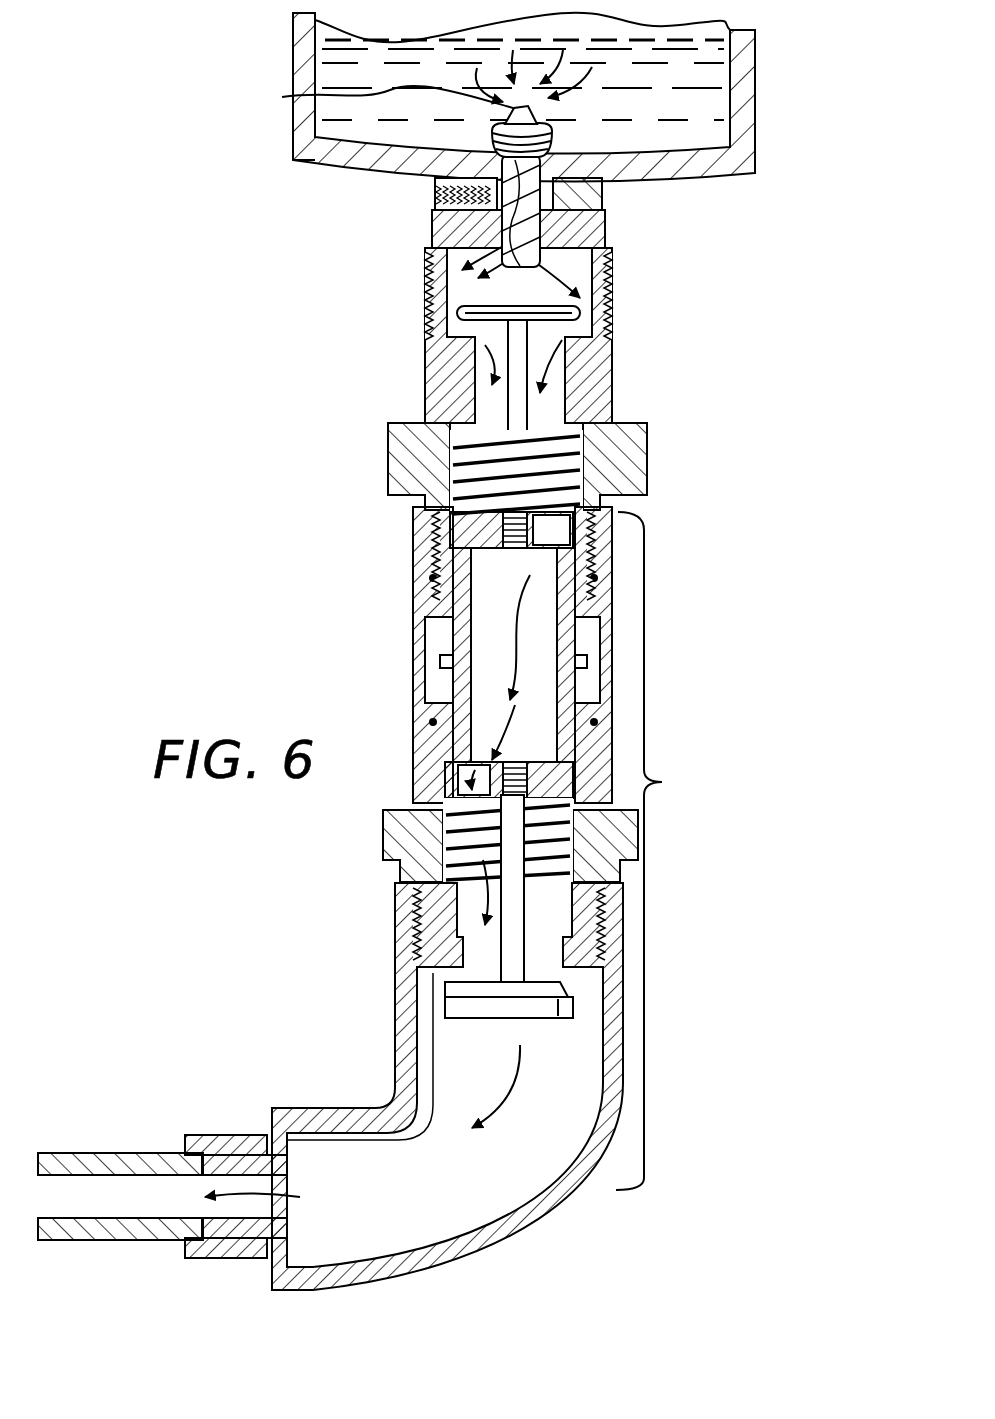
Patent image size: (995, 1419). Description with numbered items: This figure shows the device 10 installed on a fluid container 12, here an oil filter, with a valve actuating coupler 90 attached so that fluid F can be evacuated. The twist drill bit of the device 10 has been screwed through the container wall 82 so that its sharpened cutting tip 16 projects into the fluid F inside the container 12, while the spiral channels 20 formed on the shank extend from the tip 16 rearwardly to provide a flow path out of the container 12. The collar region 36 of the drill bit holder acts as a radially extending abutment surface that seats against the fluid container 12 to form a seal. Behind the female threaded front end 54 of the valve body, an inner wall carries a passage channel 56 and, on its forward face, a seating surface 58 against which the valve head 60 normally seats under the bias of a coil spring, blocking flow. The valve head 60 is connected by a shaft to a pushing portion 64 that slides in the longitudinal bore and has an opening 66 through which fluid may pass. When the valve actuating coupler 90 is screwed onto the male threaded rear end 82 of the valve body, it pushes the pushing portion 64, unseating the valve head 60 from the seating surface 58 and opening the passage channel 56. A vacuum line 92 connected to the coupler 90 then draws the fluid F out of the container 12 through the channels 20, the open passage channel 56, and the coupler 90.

The device 10 is at (492, 769).
The fluid container 12 is at (740, 96).
The fluid F is at (712, 138).
The sharpened cutting tip 16 is at (384, 93).
The channels 20 is at (436, 176).
The collar region 36 is at (605, 202).
The female threaded front end 54 is at (432, 280).
The passage channel 56 is at (470, 386).
The seating surface 58 is at (582, 372).
The valve head 60 is at (575, 316).
The pushing portion 64 is at (432, 532).
The opening 66 is at (563, 541).
The male threaded rear end 82 is at (697, 158).
The valve actuating coupler 90 is at (492, 901).
The vacuum line 92 is at (112, 1197).